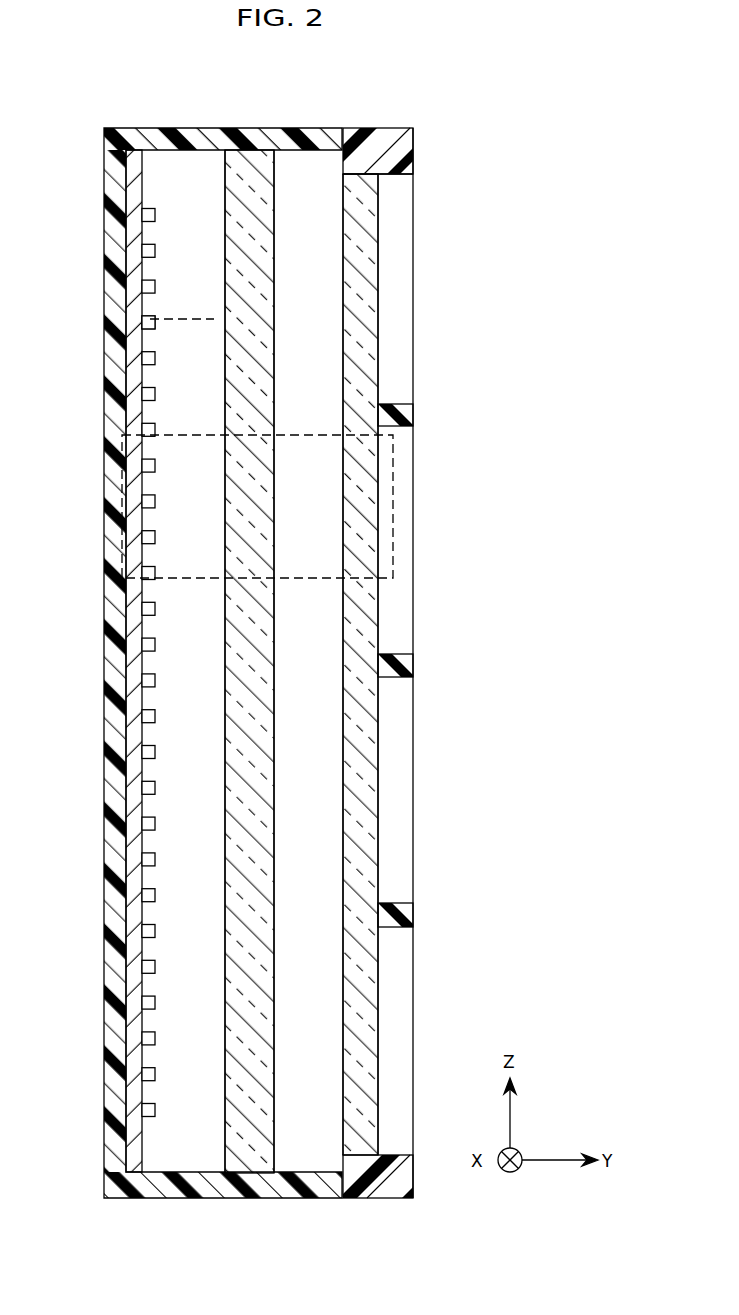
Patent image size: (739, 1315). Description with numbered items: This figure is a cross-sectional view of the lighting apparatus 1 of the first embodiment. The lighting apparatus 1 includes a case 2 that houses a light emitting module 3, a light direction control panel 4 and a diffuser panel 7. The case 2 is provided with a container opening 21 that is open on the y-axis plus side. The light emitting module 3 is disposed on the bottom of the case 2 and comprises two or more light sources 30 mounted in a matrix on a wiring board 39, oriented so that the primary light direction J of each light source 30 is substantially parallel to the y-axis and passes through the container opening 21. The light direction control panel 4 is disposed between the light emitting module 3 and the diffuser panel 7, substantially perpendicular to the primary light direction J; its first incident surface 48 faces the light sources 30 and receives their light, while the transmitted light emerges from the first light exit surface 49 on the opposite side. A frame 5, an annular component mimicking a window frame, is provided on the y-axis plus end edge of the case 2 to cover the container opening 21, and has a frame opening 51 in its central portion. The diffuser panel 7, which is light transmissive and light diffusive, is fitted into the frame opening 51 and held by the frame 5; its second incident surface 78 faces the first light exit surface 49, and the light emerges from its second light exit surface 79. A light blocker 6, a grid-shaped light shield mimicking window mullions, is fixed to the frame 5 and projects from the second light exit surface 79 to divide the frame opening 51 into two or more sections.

The lighting apparatus 1 is at (492, 92).
The case 2 is at (303, 150).
The light emitting module 3 is at (152, 204).
The light direction control panel 4 is at (245, 180).
The frame 5 is at (385, 150).
The frame opening 51 is at (355, 180).
The light blocker 6 is at (395, 662).
The diffuser panel 7 is at (365, 837).
The second incident surface 78 is at (336, 718).
The second light exit surface 79 is at (378, 758).
The container opening 21 is at (347, 1170).
The light source 30 is at (150, 320).
The wiring board 39 is at (130, 252).
The first incident surface 48 is at (218, 1130).
The first light exit surface 49 is at (283, 1130).
The primary light direction J is at (177, 318).